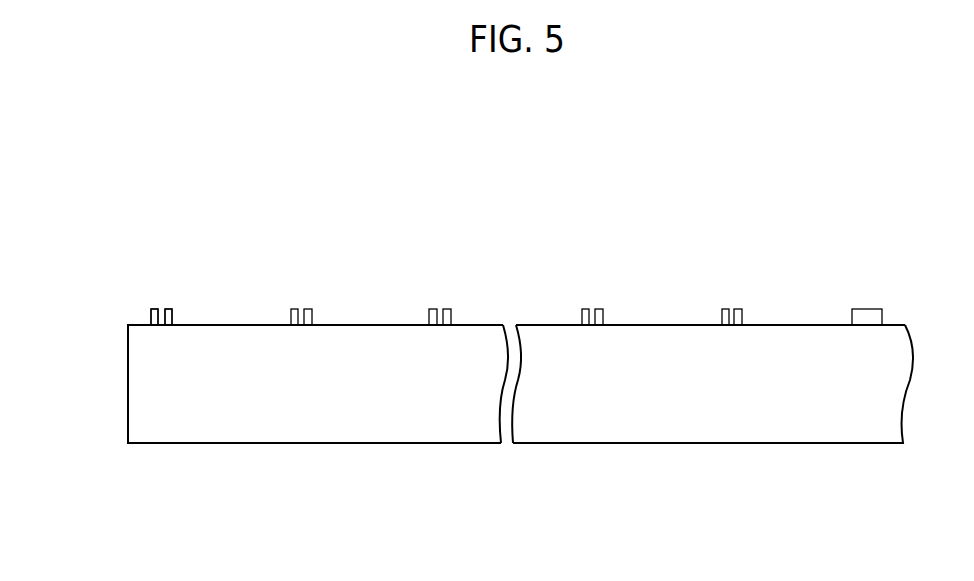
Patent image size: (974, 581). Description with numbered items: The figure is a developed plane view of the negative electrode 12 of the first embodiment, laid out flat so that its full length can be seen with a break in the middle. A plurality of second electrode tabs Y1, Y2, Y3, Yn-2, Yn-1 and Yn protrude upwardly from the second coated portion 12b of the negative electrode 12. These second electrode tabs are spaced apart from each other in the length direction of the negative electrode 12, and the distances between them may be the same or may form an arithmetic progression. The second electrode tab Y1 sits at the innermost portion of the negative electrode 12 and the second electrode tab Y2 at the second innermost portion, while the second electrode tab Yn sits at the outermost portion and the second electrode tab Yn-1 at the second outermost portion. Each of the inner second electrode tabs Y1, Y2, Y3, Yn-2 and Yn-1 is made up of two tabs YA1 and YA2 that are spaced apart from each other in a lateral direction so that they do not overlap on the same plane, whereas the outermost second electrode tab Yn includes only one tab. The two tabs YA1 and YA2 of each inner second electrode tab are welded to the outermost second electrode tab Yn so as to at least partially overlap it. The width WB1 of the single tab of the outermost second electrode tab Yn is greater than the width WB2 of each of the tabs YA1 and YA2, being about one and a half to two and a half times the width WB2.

The negative electrode 12 is at (444, 474).
The second coated portion 12b is at (140, 407).
The second electrode tab Y1 is at (132, 306).
The tab YA1 is at (168, 308).
The tab YA2 is at (153, 308).
The second electrode tab Y2 is at (330, 306).
The second electrode tab Y3 is at (436, 294).
The second electrode tab Yn-2 is at (594, 294).
The second electrode tab Yn-1 is at (731, 294).
The second electrode tab Yn is at (897, 310).
The width of the tab of the second electrode tab Yn WB1 is at (907, 287).
The width of each tab YA1, YA2 WB2 is at (337, 287).